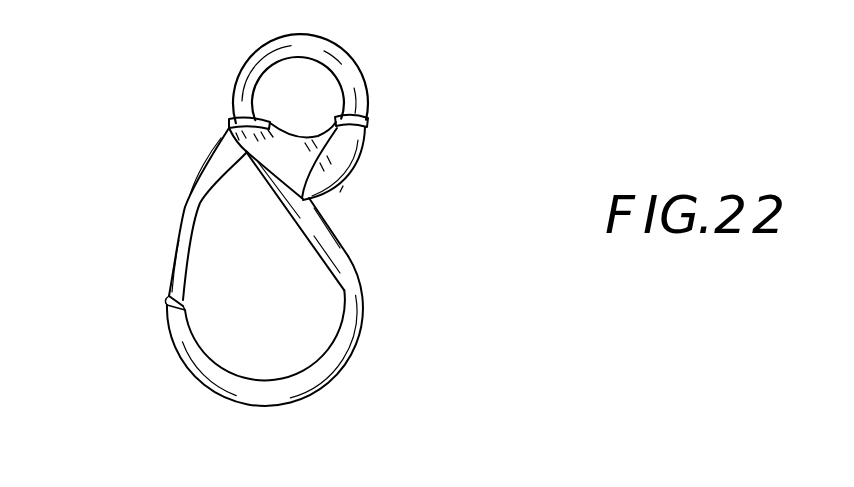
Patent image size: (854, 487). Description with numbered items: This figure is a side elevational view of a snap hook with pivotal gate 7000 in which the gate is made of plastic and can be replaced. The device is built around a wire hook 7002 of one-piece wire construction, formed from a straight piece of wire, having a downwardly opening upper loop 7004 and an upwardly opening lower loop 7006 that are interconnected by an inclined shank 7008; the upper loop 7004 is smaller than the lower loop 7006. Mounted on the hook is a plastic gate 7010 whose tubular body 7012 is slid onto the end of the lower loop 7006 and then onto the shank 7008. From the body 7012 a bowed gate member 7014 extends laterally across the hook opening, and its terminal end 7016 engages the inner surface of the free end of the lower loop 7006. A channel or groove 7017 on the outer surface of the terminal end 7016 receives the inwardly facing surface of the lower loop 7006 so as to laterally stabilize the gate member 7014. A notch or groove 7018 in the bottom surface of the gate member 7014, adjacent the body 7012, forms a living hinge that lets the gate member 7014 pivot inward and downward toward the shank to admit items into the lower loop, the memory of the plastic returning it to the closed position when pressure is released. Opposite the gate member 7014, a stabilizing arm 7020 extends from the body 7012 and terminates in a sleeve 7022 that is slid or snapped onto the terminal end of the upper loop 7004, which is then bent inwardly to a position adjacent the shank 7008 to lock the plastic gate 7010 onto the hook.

The snap hook with pivotal gate 7000 is at (173, 365).
The wire hook 7002 is at (367, 293).
The upper loop 7004 is at (353, 67).
The lower loop 7006 is at (356, 347).
The inclined shank 7008 is at (334, 237).
The plastic gate 7010 is at (130, 139).
The tubular body 7012 is at (233, 119).
The gate member 7014 is at (186, 207).
The terminal end 7016 is at (178, 304).
The channel or groove 7017 is at (164, 297).
The notch or groove 7018 is at (244, 155).
The stabilizing arm 7020 is at (295, 139).
The sleeve 7022 is at (347, 148).